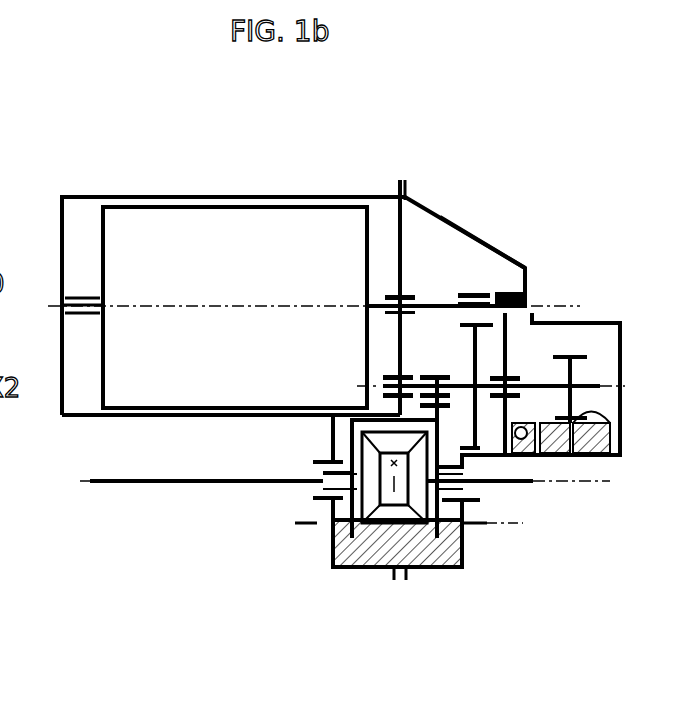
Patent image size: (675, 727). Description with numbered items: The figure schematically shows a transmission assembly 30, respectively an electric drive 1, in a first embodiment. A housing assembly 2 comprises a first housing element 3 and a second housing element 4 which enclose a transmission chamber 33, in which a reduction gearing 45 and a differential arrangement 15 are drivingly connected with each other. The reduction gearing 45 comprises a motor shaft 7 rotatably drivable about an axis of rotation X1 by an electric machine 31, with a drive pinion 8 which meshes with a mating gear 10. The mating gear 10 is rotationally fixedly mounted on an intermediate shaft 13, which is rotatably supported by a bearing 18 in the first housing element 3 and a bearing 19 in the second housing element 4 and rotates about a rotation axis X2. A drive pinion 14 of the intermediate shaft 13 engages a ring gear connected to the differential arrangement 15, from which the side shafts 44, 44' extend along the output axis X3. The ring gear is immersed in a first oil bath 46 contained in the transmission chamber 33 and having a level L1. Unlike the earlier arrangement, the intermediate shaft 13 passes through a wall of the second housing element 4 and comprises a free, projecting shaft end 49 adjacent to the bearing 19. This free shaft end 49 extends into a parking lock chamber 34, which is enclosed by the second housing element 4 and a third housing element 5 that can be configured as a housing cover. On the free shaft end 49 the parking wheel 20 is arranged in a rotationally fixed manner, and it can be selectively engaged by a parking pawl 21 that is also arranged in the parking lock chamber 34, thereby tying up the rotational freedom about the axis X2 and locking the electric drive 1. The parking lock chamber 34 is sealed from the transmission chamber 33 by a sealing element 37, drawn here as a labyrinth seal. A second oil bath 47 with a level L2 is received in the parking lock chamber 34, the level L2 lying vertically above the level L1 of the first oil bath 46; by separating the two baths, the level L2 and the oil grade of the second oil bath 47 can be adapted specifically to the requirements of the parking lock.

The electric drive 1 is at (434, 93).
The housing assembly 2 is at (341, 164).
The first housing element 3 is at (142, 196).
The second housing element 4 is at (490, 240).
The third housing element 5 is at (600, 323).
The motor shaft 7 is at (427, 303).
The drive pinion 8 is at (487, 281).
The mating gear 10 is at (474, 300).
The intermediate shaft 13 is at (520, 383).
The drive pinion 14 is at (443, 355).
The differential arrangement 15 is at (352, 446).
The bearing 18 is at (397, 373).
The bearing 19 is at (487, 372).
The parking wheel 20 is at (610, 457).
The parking pawl 21 is at (543, 457).
The transmission assembly 30 is at (525, 183).
The electric machine 31 is at (212, 227).
The transmission chamber 33 is at (401, 240).
The parking lock chamber 34 is at (548, 323).
The sealing element 37 is at (512, 400).
The side shaft 44 is at (223, 540).
The side shaft 44' is at (495, 570).
The reduction gearing 45 is at (464, 245).
The first oil bath 46 is at (347, 570).
The second oil bath 47 is at (567, 457).
The free shaft end 49 is at (583, 383).
The level L1 is at (295, 523).
The level L2 is at (627, 455).
The axis of rotation X1 is at (296, 309).
The rotation axis X2 is at (476, 387).
The output axis X3 is at (326, 479).